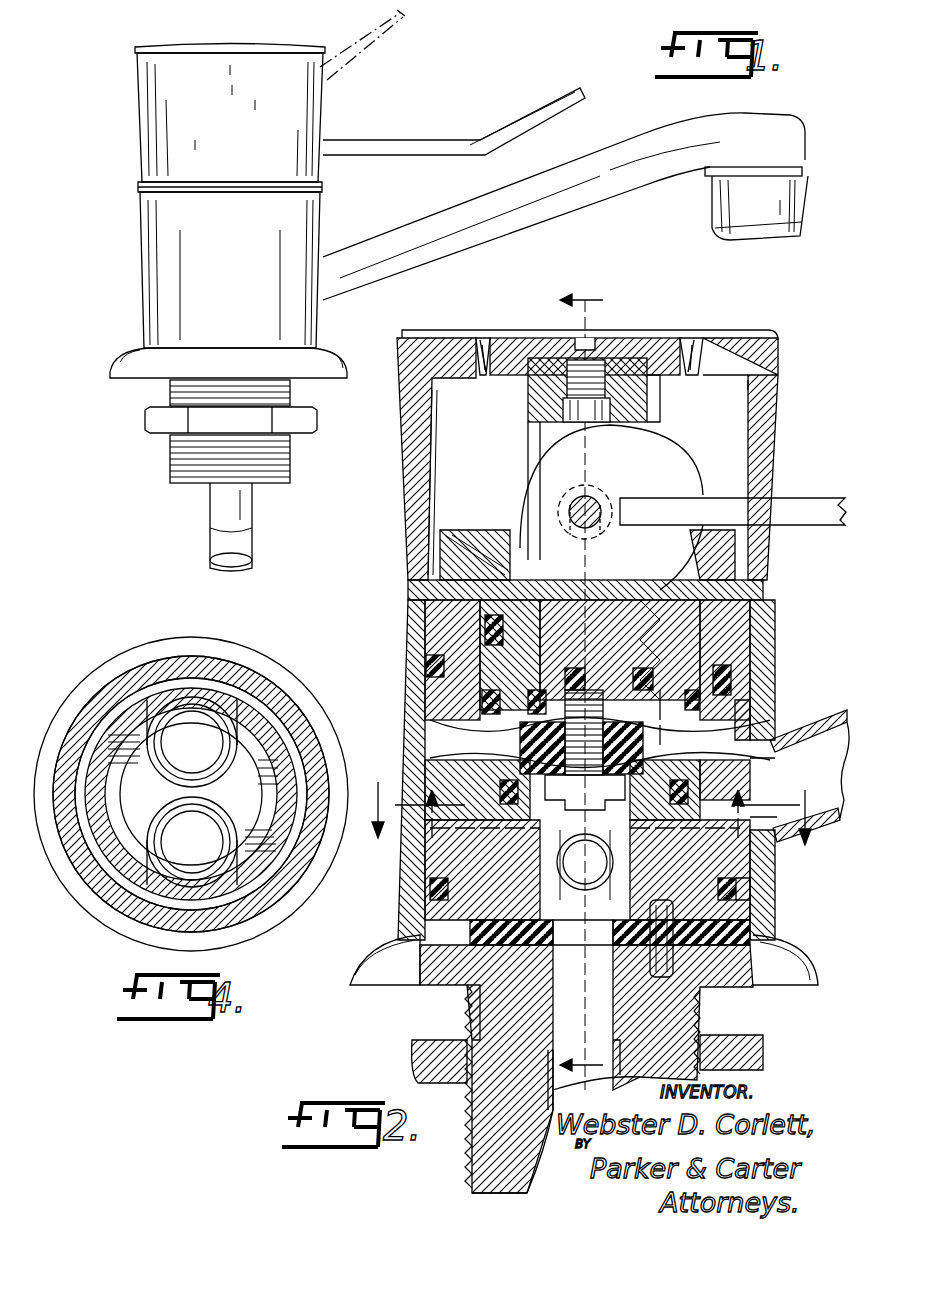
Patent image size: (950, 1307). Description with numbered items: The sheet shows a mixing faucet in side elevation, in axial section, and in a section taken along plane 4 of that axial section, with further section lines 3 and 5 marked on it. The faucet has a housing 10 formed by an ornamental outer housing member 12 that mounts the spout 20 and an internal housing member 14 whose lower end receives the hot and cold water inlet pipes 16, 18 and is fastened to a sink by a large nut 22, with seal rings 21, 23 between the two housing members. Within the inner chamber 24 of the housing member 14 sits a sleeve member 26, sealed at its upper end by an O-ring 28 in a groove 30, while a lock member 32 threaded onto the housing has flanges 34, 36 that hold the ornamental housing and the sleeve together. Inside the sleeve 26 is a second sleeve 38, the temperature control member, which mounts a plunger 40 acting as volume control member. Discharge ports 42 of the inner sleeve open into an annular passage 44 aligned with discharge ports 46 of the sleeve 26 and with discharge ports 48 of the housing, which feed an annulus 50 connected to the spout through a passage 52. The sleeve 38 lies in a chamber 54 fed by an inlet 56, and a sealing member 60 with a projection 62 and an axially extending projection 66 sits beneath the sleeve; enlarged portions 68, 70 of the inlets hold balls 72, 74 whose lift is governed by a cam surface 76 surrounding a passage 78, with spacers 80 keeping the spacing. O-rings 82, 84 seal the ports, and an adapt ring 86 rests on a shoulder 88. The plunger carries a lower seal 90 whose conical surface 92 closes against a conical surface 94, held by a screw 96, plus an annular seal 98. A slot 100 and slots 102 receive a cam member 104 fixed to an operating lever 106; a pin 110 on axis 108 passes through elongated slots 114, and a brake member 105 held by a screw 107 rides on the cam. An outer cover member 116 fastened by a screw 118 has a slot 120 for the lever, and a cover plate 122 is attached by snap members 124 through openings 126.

In FIG. 2, the housing 10 is at (770, 965).
In FIG. 1, the ornamental outer housing member 12 is at (146, 275).
In FIG. 2, the ornamental outer housing member 12 is at (762, 700).
In FIG. 4, the internal housing member 14 is at (163, 660).
In FIG. 2, the internal housing member 14 is at (740, 628).
In FIG. 1, the hot water inlet pipe 16 is at (213, 513).
In FIG. 2, the hot water inlet pipe 16 is at (470, 1120).
In FIG. 1, the cold water inlet pipe 18 is at (214, 548).
In FIG. 1, the spout 20 is at (650, 128).
In FIG. 2, the spout 20 is at (855, 712).
In FIG. 2, the seal ring 21 is at (740, 892).
In FIG. 1, the nut 22 is at (160, 425).
In FIG. 2, the nut 22 is at (412, 1062).
In FIG. 2, the seal ring 23 is at (700, 695).
In FIG. 2, the inner chamber 24 is at (470, 912).
In FIG. 4, the sleeve member 26 is at (125, 690).
In FIG. 2, the sleeve member 26 is at (733, 672).
In FIG. 2, the O-ring 28 is at (775, 672).
In FIG. 2, the groove 30 is at (480, 698).
In FIG. 2, the lock member 32 is at (455, 548).
In FIG. 1, the flange 34 is at (142, 190).
In FIG. 2, the flange 34 is at (410, 588).
In FIG. 2, the flange 36 is at (490, 560).
In FIG. 2, the second sleeve 38 is at (745, 590).
In FIG. 2, the plunger 40 is at (620, 637).
In FIG. 2, the discharge ports 42 is at (586, 740).
In FIG. 2, the annular passage 44 is at (542, 731).
In FIG. 2, the discharge ports 46 is at (432, 725).
In FIG. 2, the discharge ports 48 is at (430, 752).
In FIG. 2, the annulus 50 is at (755, 720).
In FIG. 2, the passage 52 is at (775, 765).
In FIG. 4, the chamber 54 is at (250, 775).
In FIG. 2, the chamber 54 is at (585, 865).
In FIG. 2, the inlet 56 is at (500, 1069).
In FIG. 2, the sealing member 60 is at (466, 990).
In FIG. 2, the projection 62 is at (650, 1027).
In FIG. 2, the axially extending projection 66 is at (680, 975).
In FIG. 4, the enlarged portion 68 is at (160, 875).
In FIG. 2, the enlarged portion 68 is at (610, 926).
In FIG. 4, the enlarged portion 70 is at (195, 705).
In FIG. 4, the ball 72 is at (192, 842).
In FIG. 2, the ball 72 is at (583, 926).
In FIG. 4, the ball 74 is at (192, 742).
In FIG. 2, the cam surface 76 is at (540, 852).
In FIG. 2, the passage 78 is at (540, 810).
In FIG. 4, the spacers 80 is at (250, 720).
In FIG. 2, the spacers 80 is at (430, 880).
In FIG. 2, the O-ring 82 is at (750, 790).
In FIG. 2, the O-ring 84 is at (426, 662).
In FIG. 2, the adapt ring 86 is at (660, 600).
In FIG. 2, the shoulder 88 is at (485, 628).
In FIG. 2, the lower seal 90 is at (631, 705).
In FIG. 2, the conical surface 92 is at (634, 726).
In FIG. 2, the conical surface 94 is at (585, 795).
In FIG. 2, the screw 96 is at (590, 700).
In FIG. 2, the annular seal 98 is at (580, 600).
In FIG. 2, the slot 100 is at (528, 440).
In FIG. 2, the slots 102 is at (528, 415).
In FIG. 2, the cam member 104 is at (690, 478).
In FIG. 2, the brake member 105 is at (575, 422).
In FIG. 1, the operating lever 106 is at (390, 145).
In FIG. 2, the operating lever 106 is at (848, 478).
In FIG. 2, the screw 107 is at (562, 382).
In FIG. 2, the axis 108 is at (592, 498).
In FIG. 2, the pin 110 is at (575, 505).
In FIG. 2, the elongated slots 114 is at (592, 545).
In FIG. 1, the outer cover member 116 is at (140, 115).
In FIG. 2, the outer cover member 116 is at (410, 472).
In FIG. 2, the screw 118 is at (618, 345).
In FIG. 2, the slot 120 is at (775, 362).
In FIG. 1, the outer cover plate 122 is at (160, 47).
In FIG. 2, the outer cover plate 122 is at (437, 332).
In FIG. 2, the snap members 124 is at (484, 340).
In FIG. 2, the openings 126 is at (486, 340).
In FIG. 2, the section line 3- 3 is at (590, 683).
In FIG. 2, the section plane 4— 4 is at (589, 800).
In FIG. 2, the section line 5- 5 is at (584, 826).